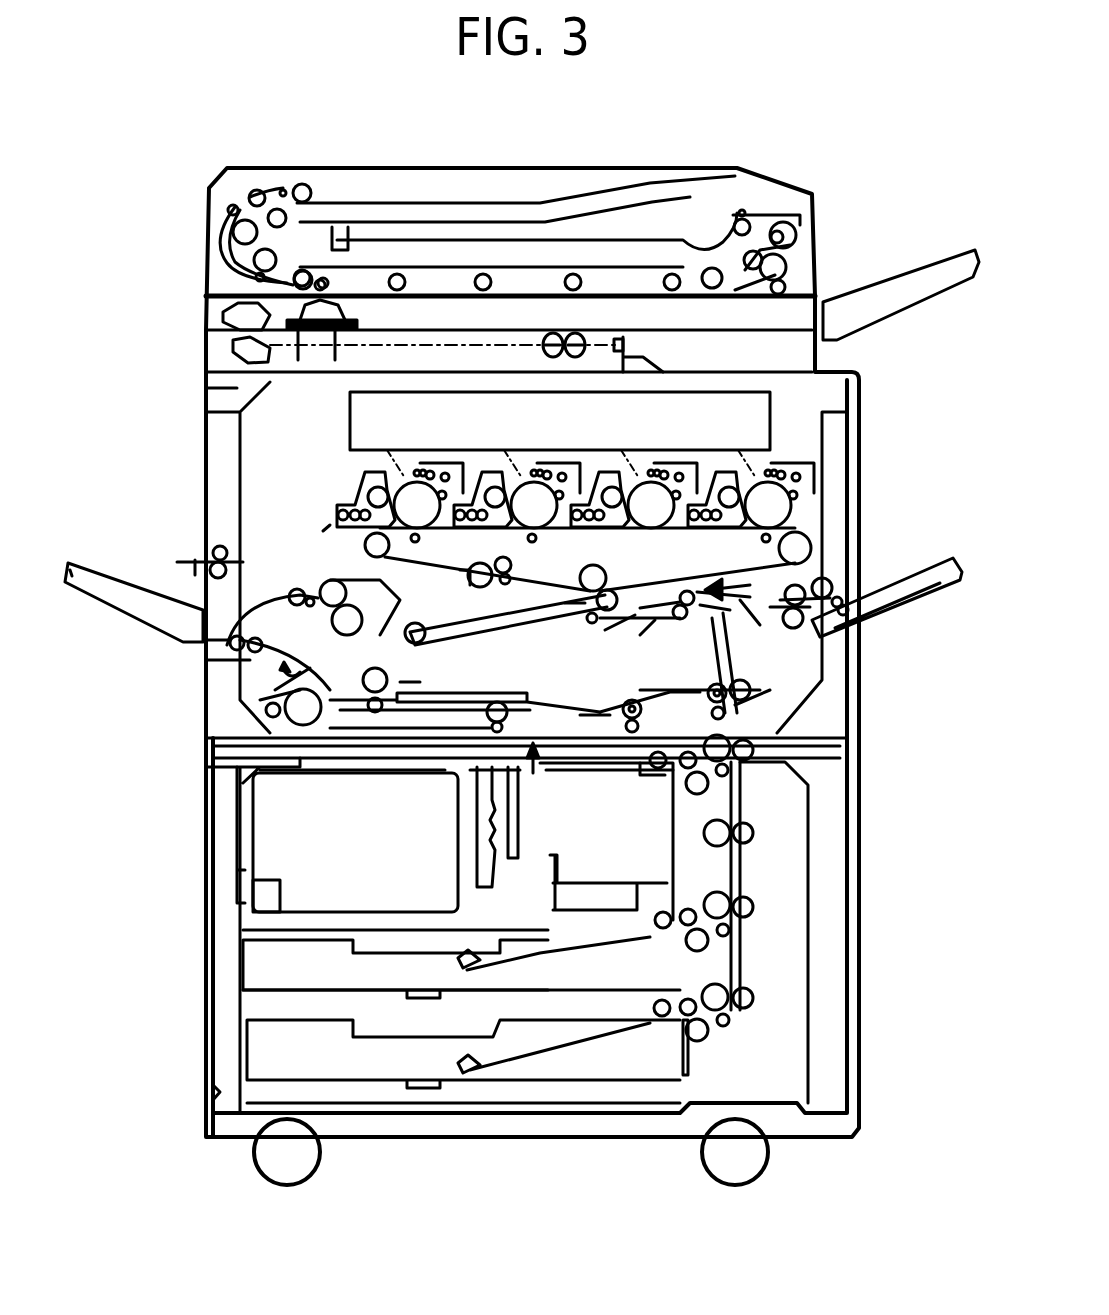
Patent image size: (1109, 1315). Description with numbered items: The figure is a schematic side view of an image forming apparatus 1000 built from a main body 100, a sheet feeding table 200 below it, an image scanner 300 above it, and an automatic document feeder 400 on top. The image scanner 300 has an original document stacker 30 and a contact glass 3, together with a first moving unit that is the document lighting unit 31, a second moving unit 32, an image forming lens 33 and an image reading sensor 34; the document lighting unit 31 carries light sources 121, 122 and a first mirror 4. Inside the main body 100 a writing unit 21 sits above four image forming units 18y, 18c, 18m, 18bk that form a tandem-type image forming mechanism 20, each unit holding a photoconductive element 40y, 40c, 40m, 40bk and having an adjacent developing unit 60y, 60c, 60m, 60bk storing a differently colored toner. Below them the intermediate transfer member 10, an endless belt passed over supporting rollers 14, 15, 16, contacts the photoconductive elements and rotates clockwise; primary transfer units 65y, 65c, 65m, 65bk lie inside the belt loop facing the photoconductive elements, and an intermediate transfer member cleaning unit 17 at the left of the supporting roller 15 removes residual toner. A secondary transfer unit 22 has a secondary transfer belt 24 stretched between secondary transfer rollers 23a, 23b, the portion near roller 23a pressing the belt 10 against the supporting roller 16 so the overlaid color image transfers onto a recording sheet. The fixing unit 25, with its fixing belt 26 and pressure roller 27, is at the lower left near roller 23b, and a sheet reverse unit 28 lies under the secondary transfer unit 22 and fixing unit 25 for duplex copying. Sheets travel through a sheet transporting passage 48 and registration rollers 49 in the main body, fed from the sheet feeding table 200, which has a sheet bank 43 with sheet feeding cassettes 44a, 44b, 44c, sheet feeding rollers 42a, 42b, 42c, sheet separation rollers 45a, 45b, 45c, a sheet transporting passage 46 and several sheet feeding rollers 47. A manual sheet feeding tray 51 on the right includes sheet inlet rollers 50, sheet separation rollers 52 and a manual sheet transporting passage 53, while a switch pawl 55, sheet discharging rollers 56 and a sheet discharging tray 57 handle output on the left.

The image forming apparatus 1000 is at (744, 152).
The automatic document feeder 400 is at (191, 200).
The image scanner 300 is at (191, 322).
The main body 100 is at (191, 456).
The sheet feeding table 200 is at (186, 853).
The original document stacker 30 is at (483, 185).
The contact glass 3 is at (610, 290).
The second moving unit 32 is at (230, 347).
The image forming lens 33 is at (545, 340).
The image reading sensor 34 is at (625, 345).
The light source 121 is at (300, 275).
The light source 122 is at (350, 309).
The first mirror 4 is at (298, 362).
The document lighting unit 31 is at (335, 362).
The writing unit 21 is at (770, 402).
The image forming unit 18y is at (426, 467).
The image forming unit 18c is at (543, 467).
The image forming unit 18m is at (660, 467).
The image forming unit 18bk is at (783, 462).
The photoconductive element 40y is at (405, 481).
The photoconductive element 40c is at (522, 481).
The photoconductive element 40m is at (640, 481).
The photoconductive element 40bk is at (795, 513).
The developing unit 60y is at (363, 478).
The developing unit 60c is at (482, 472).
The developing unit 60m is at (600, 470).
The developing unit 60bk is at (722, 470).
The tandem-type image forming mechanism 20 is at (330, 498).
The supporting roller 14 is at (795, 546).
The primary transfer unit 65y is at (422, 542).
The primary transfer unit 65c is at (540, 542).
The primary transfer unit 65m is at (660, 557).
The primary transfer unit 65bk is at (780, 549).
The supporting roller 15 is at (390, 553).
The intermediate transfer member cleaning unit 17 is at (470, 587).
The supporting roller 16 is at (590, 622).
The secondary transfer unit 22 is at (612, 611).
The secondary transfer belt 24 is at (505, 628).
The secondary transfer roller 23a is at (612, 624).
The secondary transfer roller 23b is at (430, 639).
The intermediate transfer member 10 is at (636, 603).
The fixing belt 26 is at (300, 583).
The pressure roller 27 is at (395, 638).
The fixing unit 25 is at (225, 681).
The switch pawl 55 is at (205, 659).
The sheet discharging rollers 56 is at (210, 546).
The sheet discharging tray 57 is at (110, 603).
The sheet inlet rollers 50 is at (850, 576).
The manual sheet feeding tray 51 is at (895, 610).
The sheet separation rollers 52 is at (858, 648).
The manual sheet transporting passage 53 is at (745, 610).
The registration rollers 49 is at (693, 614).
The sheet transporting passage 48 is at (755, 687).
The sheet reverse unit 28 is at (542, 778).
The sheet bank 43 is at (235, 999).
The sheet feeding cassette 44a is at (330, 915).
The sheet feeding cassette 44b is at (285, 999).
The sheet feeding cassette 44c is at (350, 1083).
The sheet feeding roller 42a is at (650, 763).
The sheet feeding roller 42b is at (640, 882).
The sheet feeding roller 42c is at (640, 985).
The sheet separation roller 45a is at (690, 794).
The sheet separation roller 45b is at (710, 949).
The sheet separation roller 45c is at (705, 1039).
The sheet feeding rollers 47 is at (755, 763).
The sheet transporting passage 46 is at (745, 863).